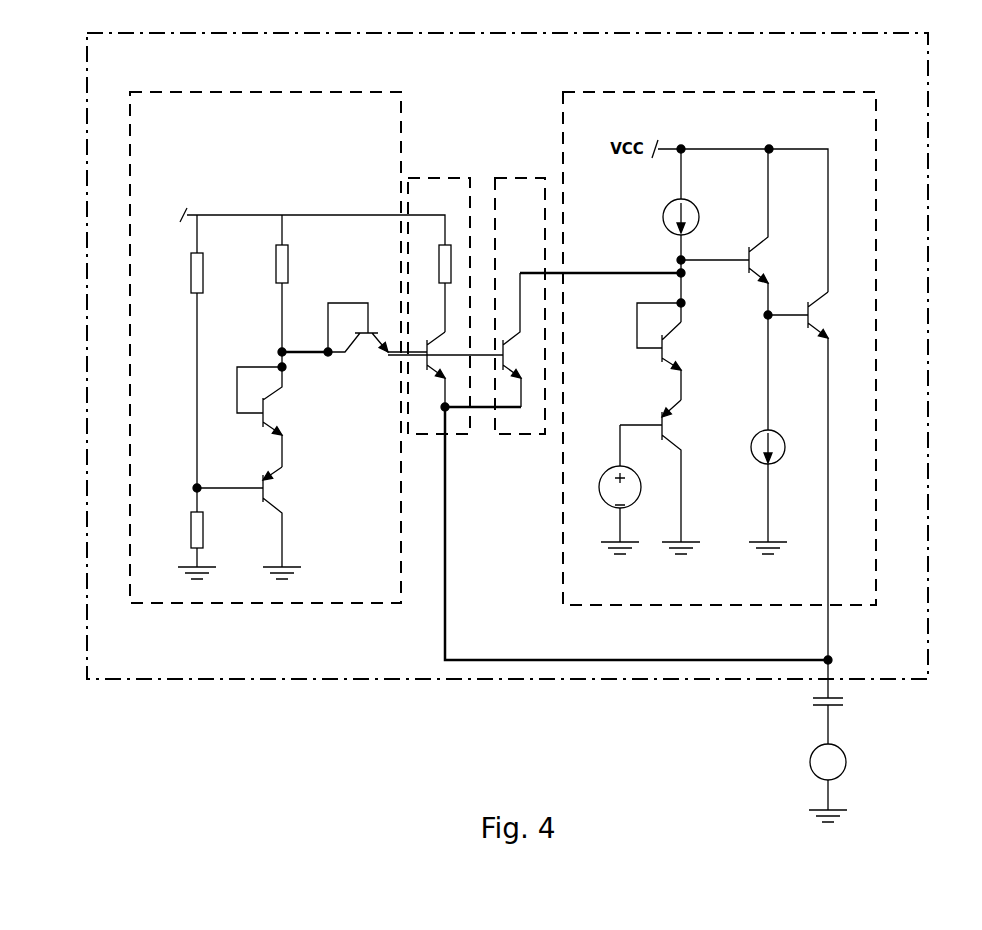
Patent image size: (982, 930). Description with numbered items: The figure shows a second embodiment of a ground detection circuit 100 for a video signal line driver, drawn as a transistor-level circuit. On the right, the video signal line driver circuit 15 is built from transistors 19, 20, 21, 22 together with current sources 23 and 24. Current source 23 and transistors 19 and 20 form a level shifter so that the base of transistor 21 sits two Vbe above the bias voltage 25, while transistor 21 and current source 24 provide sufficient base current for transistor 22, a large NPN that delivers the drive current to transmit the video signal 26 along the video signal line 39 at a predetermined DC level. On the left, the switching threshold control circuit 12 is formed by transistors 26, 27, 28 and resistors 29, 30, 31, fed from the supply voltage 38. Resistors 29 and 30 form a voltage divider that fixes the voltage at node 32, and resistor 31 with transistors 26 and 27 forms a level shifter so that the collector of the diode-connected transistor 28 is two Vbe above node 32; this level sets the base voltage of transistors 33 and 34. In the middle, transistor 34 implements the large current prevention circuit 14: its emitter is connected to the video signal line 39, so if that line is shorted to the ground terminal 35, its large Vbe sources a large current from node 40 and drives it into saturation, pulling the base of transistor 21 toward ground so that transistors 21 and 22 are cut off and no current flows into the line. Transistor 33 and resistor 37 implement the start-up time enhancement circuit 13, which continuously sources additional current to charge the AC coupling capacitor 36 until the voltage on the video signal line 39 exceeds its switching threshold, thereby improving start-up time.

The ground detection circuit 100 is at (910, 122).
The switching threshold control circuit 12 is at (280, 120).
The start-up time enhancement circuit 13 is at (452, 195).
The large current prevention circuit 14 is at (502, 197).
The video signal line driver circuit 15 is at (735, 135).
The transistor 19 is at (675, 430).
The transistor 20 is at (673, 352).
The transistor 21 is at (762, 262).
The transistor 22 is at (815, 312).
The current source 23 is at (695, 213).
The current source 24 is at (778, 437).
The bias voltage 25 is at (615, 468).
The transistor 26 is at (280, 490).
The transistor 27 is at (275, 415).
The transistor 28 is at (355, 345).
The resistor 29 is at (191, 520).
The resistor 30 is at (191, 265).
The resistor 31 is at (275, 257).
The node 32 is at (243, 487).
The transistor 33 is at (435, 372).
The transistor 34 is at (510, 372).
The ground terminal 35 is at (205, 566).
The AC coupling capacitor 36 is at (808, 700).
The resistor 37 is at (438, 280).
The VDD 38 is at (226, 213).
The video signal line 39 is at (833, 652).
The node 40 is at (660, 268).